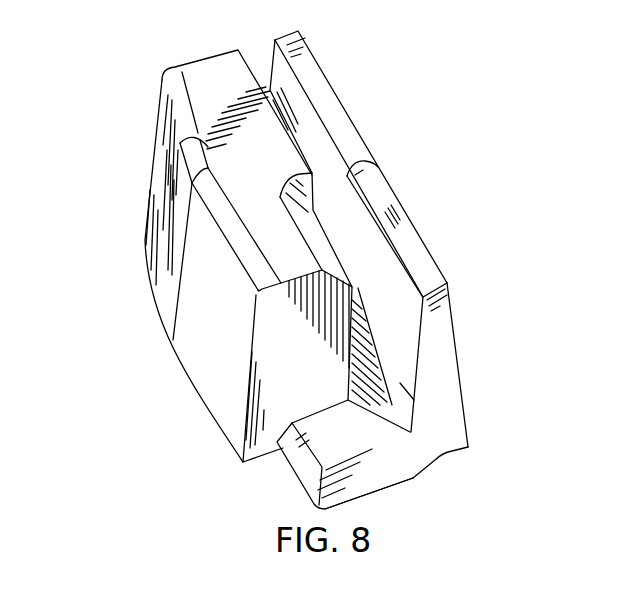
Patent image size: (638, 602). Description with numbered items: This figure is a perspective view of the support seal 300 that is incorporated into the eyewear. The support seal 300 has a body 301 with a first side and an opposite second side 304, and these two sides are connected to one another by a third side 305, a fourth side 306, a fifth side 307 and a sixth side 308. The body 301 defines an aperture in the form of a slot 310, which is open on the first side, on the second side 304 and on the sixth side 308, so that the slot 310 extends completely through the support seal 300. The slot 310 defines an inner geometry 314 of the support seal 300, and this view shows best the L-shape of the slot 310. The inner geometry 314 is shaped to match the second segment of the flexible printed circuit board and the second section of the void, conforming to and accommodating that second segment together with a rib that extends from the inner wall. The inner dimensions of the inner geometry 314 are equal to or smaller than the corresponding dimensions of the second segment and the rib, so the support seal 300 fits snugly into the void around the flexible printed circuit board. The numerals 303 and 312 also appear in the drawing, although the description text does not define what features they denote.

The support seal 300 is at (108, 132).
The body 301 is at (452, 452).
The arm end 303 is at (252, 460).
The second side 304 is at (445, 347).
The third side 305 is at (453, 315).
The fourth side 306 is at (398, 485).
The fifth side 307 is at (200, 357).
The sixth side 308 is at (212, 65).
The slot 310 is at (310, 113).
The foot block 312 is at (345, 454).
The inner geometry 314 is at (400, 384).